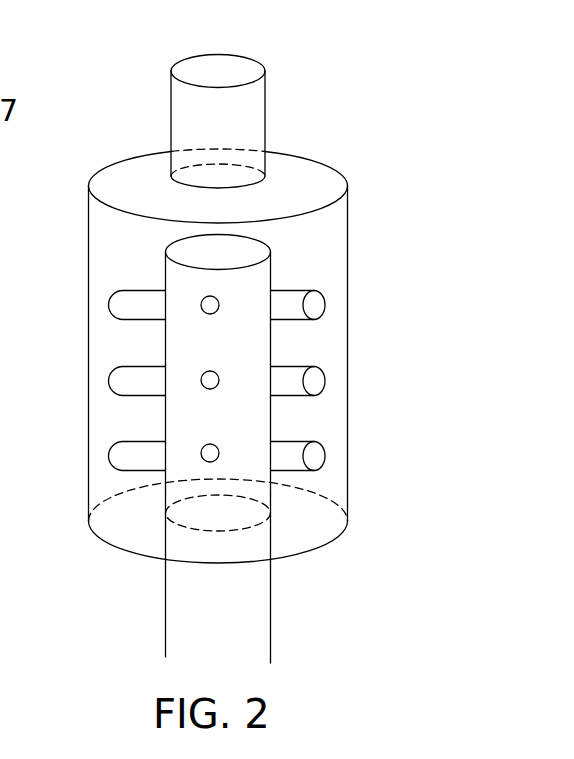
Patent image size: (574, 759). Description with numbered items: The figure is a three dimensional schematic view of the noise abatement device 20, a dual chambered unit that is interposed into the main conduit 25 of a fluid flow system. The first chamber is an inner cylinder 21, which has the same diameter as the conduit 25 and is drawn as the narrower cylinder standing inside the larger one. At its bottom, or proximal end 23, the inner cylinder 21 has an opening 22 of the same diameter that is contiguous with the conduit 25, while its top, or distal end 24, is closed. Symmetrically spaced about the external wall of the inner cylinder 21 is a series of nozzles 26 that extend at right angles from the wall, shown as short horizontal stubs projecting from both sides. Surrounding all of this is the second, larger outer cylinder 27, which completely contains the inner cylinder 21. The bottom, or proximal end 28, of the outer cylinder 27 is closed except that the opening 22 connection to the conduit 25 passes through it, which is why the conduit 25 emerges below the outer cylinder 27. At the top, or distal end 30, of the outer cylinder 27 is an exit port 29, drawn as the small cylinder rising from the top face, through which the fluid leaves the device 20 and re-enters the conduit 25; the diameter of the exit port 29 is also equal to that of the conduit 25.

The noise abatement device 20 is at (360, 275).
The inner cylinder 21 is at (254, 420).
The opening 22 is at (231, 525).
The proximal end 23 is at (164, 512).
The distal end 24 is at (232, 267).
The main conduit 25 is at (267, 105).
The nozzles 26 is at (130, 300).
The outer cylinder 27 is at (348, 480).
The proximal end 28 is at (305, 553).
The exit port 29 is at (231, 190).
The distal end 30 is at (118, 158).